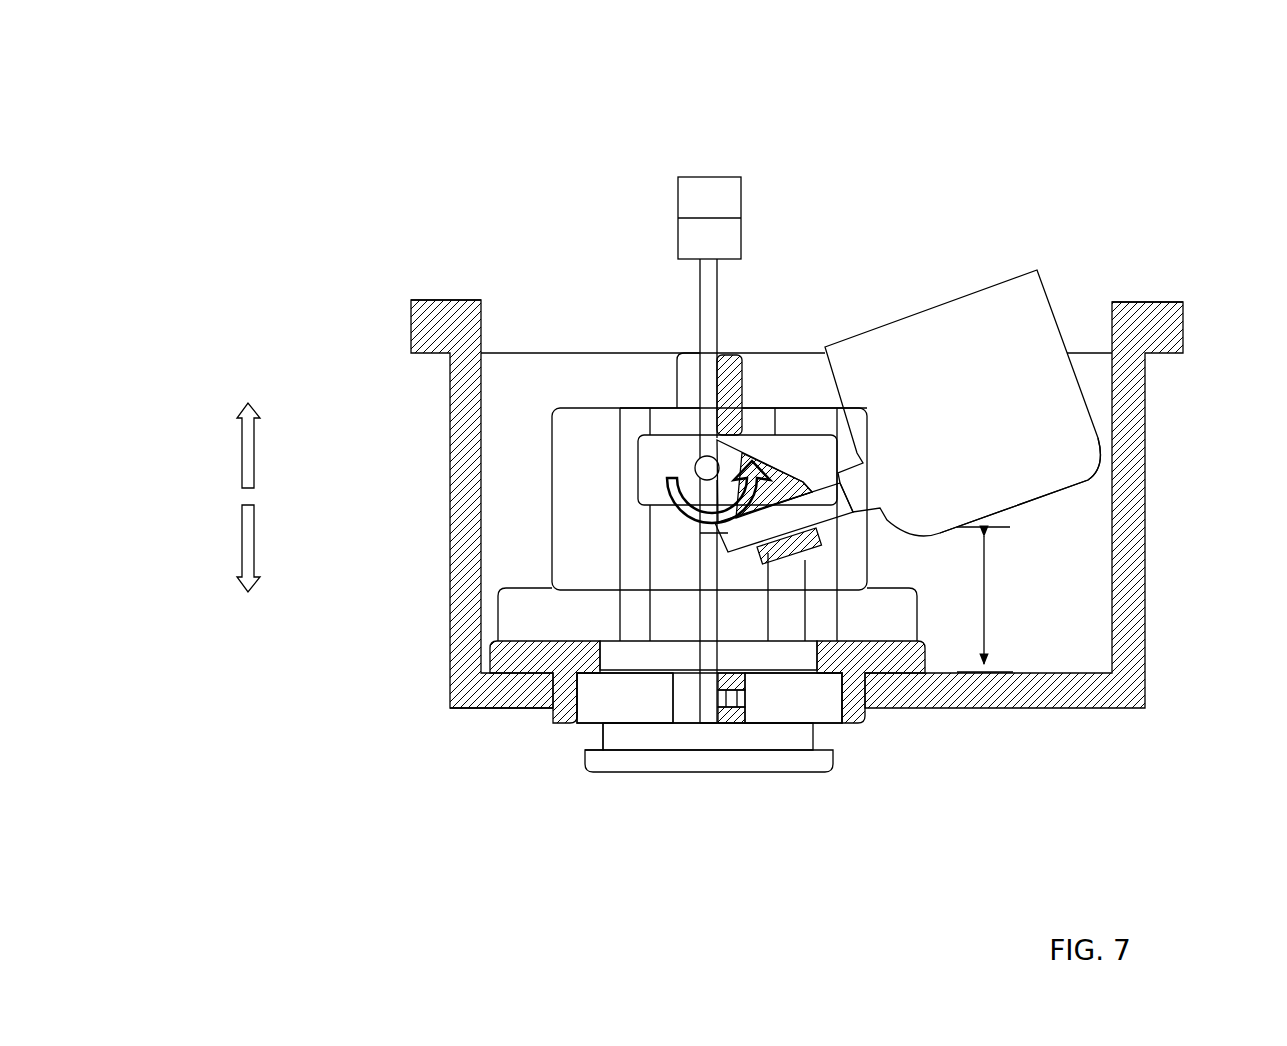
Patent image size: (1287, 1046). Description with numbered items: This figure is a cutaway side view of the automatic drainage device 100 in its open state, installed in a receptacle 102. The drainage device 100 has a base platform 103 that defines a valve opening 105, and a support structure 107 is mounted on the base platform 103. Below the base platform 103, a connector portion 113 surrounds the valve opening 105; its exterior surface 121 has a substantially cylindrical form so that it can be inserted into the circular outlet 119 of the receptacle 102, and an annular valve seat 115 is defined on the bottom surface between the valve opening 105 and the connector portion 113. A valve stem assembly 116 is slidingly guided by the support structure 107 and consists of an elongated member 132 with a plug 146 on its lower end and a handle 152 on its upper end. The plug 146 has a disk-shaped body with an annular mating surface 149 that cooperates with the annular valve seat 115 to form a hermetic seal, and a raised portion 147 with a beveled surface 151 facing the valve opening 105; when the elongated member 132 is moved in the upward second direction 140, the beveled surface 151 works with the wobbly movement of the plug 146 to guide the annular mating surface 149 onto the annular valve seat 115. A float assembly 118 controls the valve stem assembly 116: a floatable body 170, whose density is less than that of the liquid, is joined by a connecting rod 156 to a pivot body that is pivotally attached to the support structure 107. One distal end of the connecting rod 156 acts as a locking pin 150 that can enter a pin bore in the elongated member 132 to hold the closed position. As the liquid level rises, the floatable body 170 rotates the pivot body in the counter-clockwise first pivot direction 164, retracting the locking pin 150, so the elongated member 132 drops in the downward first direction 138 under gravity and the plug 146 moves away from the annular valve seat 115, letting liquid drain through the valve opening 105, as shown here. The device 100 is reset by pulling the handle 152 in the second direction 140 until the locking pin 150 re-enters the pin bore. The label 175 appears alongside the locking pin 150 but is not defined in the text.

The drainage device 100 is at (847, 178).
The receptacle 102 is at (1125, 525).
The base platform 103 is at (897, 660).
The valve opening 105 is at (615, 648).
The support structure 107 is at (530, 487).
The connector portion 113 is at (850, 714).
The annular valve seat 115 is at (595, 680).
The valve stem assembly 116 is at (684, 323).
The float assembly 118 is at (1042, 538).
The circular outlet 119 is at (766, 702).
The exterior surface 121 is at (508, 700).
The elongated member 132 is at (703, 316).
The first direction 138 is at (248, 570).
The second direction 140 is at (246, 440).
The plug 146 is at (620, 765).
The raised portion 147 is at (697, 746).
The annular mating surface 149 is at (590, 745).
The locking pin 150 is at (727, 536).
The beveled surface 151 is at (808, 729).
The handle 152 is at (688, 208).
The connecting rod 156 is at (800, 507).
The first pivot direction 164 is at (683, 474).
The floatable body 170 is at (932, 340).
The cam follower 175 is at (764, 481).